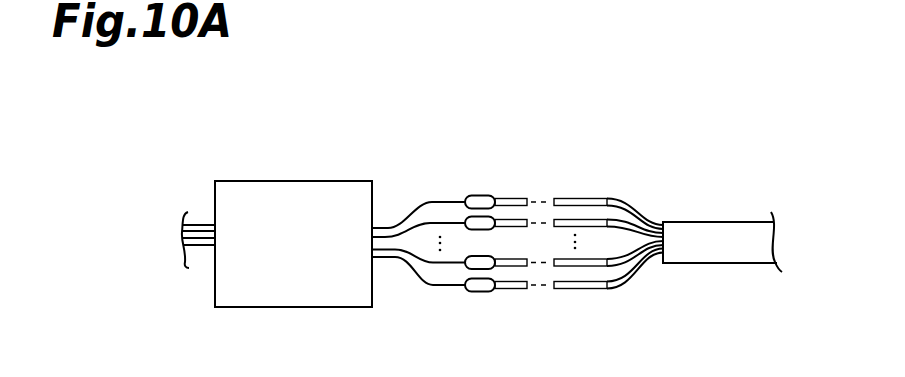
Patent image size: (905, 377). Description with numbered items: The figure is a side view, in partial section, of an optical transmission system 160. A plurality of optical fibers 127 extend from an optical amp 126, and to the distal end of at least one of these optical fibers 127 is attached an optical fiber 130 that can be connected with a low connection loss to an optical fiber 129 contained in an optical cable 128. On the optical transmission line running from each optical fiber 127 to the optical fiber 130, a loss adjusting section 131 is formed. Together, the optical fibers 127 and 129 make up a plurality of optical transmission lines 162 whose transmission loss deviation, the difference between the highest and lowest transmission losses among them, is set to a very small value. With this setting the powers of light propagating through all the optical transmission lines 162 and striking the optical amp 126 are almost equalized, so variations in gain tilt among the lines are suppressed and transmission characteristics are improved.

The optical amp 126 is at (283, 200).
The optical fibers 127 is at (433, 222).
The optical cable 128 is at (712, 242).
The optical fiber 129 is at (606, 219).
The optical fiber 130 is at (513, 262).
The loss adjusting section 131 is at (473, 264).
The optical transmission system 160 is at (632, 87).
The optical transmission lines 162 is at (647, 113).